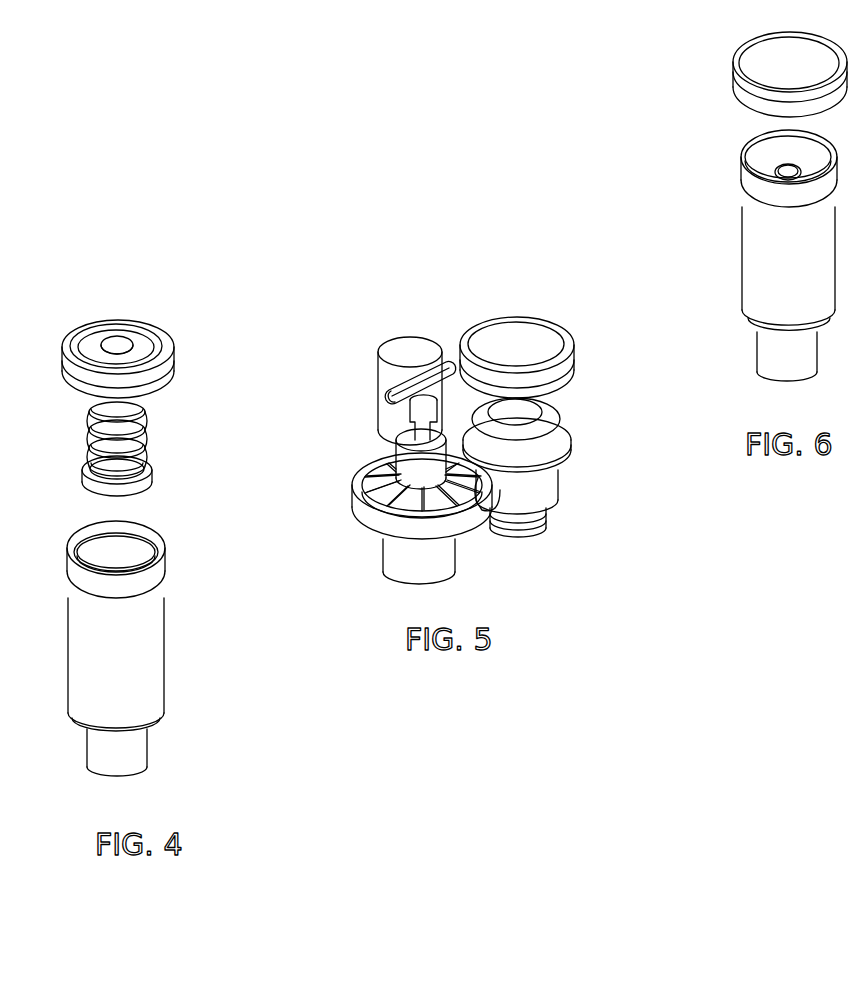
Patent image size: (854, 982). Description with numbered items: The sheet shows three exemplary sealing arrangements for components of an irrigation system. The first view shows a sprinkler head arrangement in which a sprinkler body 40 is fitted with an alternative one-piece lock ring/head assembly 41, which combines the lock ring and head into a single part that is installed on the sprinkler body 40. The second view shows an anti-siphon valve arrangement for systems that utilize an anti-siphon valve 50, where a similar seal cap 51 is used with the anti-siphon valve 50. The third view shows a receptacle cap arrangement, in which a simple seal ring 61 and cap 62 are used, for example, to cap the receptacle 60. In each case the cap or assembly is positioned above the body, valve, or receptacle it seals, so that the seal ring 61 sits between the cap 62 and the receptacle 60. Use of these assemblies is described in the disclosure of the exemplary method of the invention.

In FIG. 4, the sprinkler body 40 is at (168, 661).
In FIG. 4, the one-piece lock ring/head assembly 41 is at (174, 338).
In FIG. 5, the anti-siphon valve 50 is at (354, 452).
In FIG. 5, the seal cap 51 is at (549, 316).
In FIG. 6, the receptacle 60 is at (741, 268).
In FIG. 6, the seal ring 61 is at (772, 168).
In FIG. 6, the cap 62 is at (728, 80).